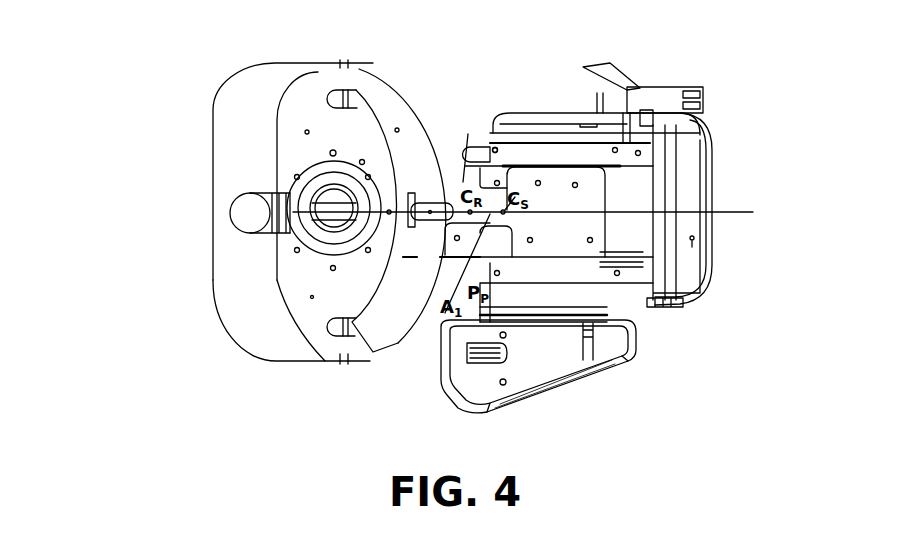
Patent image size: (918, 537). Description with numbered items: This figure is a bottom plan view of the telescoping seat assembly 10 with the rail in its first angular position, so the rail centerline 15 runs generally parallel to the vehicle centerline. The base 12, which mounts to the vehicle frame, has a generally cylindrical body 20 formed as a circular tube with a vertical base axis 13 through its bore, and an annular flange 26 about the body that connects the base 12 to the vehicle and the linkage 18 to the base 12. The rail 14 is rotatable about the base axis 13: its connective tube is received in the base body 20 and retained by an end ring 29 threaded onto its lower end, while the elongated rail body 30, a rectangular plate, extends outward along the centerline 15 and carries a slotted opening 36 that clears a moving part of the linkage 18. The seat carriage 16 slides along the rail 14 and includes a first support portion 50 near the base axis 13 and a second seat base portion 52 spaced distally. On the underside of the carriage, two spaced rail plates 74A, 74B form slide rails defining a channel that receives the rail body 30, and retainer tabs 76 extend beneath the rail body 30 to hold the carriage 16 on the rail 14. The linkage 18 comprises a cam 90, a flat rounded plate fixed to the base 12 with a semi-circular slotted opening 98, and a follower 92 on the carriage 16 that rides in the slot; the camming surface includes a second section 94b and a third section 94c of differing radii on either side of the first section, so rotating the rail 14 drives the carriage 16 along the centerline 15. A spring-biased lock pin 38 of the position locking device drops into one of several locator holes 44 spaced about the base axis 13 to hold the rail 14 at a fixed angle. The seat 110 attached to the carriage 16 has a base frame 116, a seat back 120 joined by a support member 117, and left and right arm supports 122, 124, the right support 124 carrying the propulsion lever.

The telescoping seat assembly 10 is at (128, 280).
The base 12 is at (278, 186).
The base axis 13 is at (313, 214).
The rail 14 is at (605, 196).
The rail centerline 15 is at (753, 212).
The seat carriage 16 is at (508, 92).
The linkage 18 is at (299, 50).
The cylindrical body 20 is at (310, 250).
The annular flange 26 is at (285, 238).
The end ring 29 is at (307, 233).
The rail body 30 is at (600, 183).
The slotted opening 36 is at (471, 212).
The lock pin 38 is at (390, 214).
The locator holes 44 is at (333, 150).
The first support portion 50 is at (208, 208).
The second seat base portion 52 is at (632, 257).
The rectangular plate 74A is at (551, 166).
The rectangular plate 74B is at (540, 260).
The retainer tabs 76 is at (503, 180).
The cam 90 is at (395, 95).
The follower 92 is at (419, 185).
The second camming surface section 94b is at (360, 322).
The third camming surface section 94c is at (357, 90).
The semi-circular slotted opening 98 is at (399, 128).
The seat 110 is at (676, 318).
The base frame 116 is at (622, 288).
The support member 117 is at (693, 247).
The seat back 120 is at (690, 140).
The left arm support 122 is at (663, 100).
The right arm support 124 is at (573, 377).